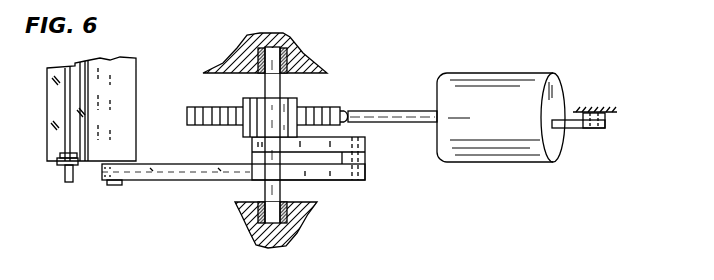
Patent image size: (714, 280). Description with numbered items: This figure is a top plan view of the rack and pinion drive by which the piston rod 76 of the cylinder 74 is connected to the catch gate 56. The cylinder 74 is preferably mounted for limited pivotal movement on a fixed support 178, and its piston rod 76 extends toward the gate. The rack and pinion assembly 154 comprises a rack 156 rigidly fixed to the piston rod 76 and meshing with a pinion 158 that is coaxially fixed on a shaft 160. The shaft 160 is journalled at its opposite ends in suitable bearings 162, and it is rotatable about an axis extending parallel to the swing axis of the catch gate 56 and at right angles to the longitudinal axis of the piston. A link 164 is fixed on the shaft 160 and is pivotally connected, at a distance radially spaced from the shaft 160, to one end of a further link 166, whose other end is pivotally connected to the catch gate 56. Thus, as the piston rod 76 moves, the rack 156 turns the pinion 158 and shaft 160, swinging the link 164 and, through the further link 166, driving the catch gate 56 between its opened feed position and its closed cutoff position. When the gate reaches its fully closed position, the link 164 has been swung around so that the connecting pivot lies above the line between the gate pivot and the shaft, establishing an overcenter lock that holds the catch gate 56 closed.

The catch gate 56 is at (95, 143).
The cylinder 74 is at (509, 108).
The piston rod 76 is at (395, 122).
The rack and pinion assembly 154 is at (161, 186).
The rack 156 is at (206, 107).
The pinion 158 is at (286, 108).
The shaft 160 is at (270, 88).
The bearings 162 is at (285, 53).
The link 164 is at (313, 146).
The further link 166 is at (200, 172).
The fixed support 178 is at (604, 117).